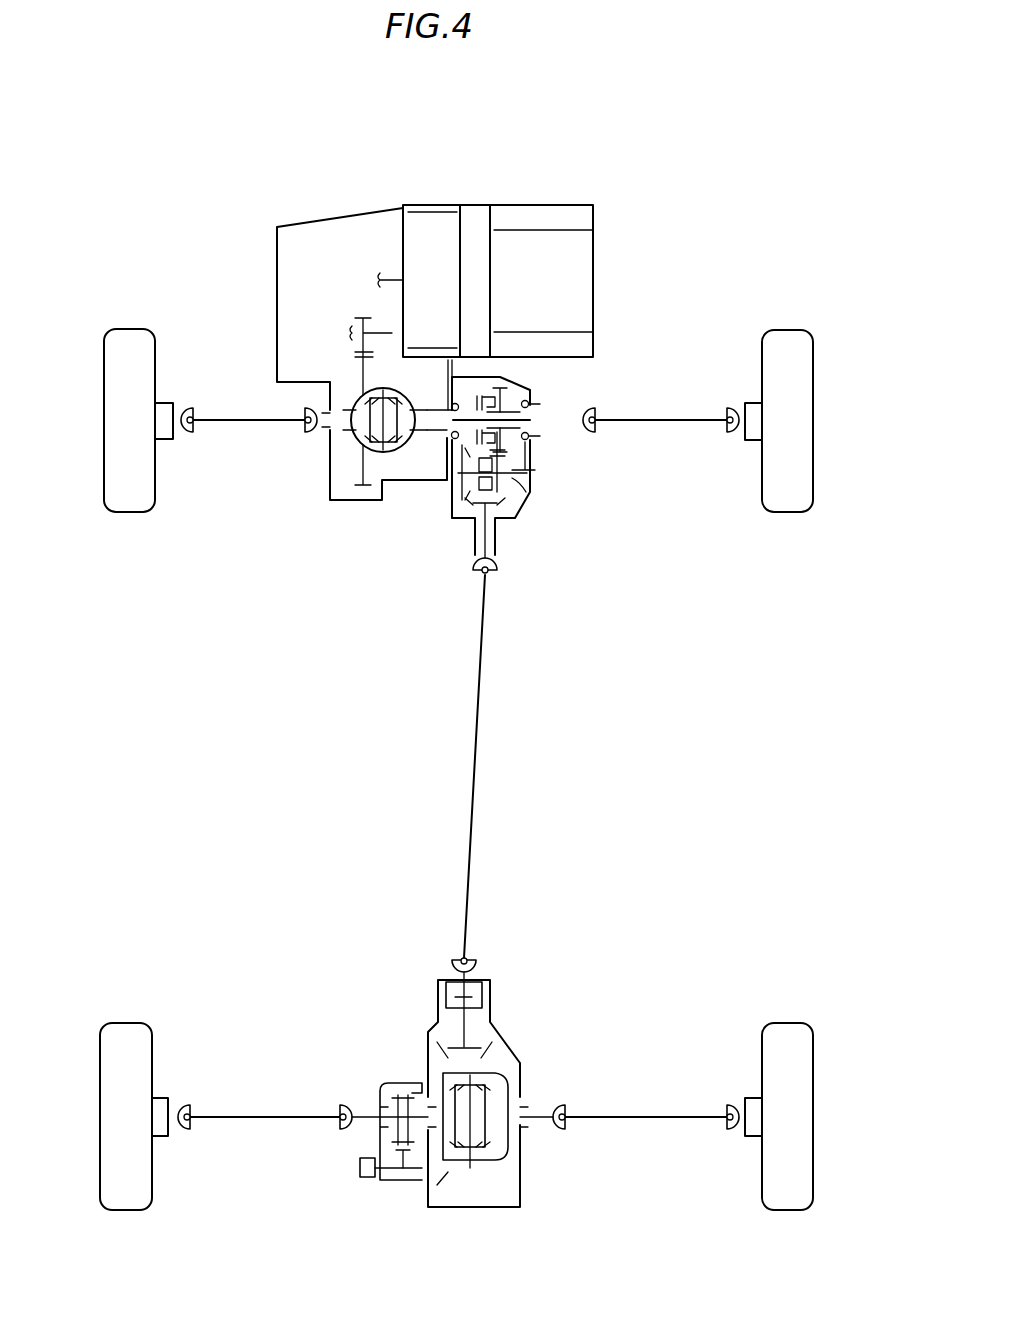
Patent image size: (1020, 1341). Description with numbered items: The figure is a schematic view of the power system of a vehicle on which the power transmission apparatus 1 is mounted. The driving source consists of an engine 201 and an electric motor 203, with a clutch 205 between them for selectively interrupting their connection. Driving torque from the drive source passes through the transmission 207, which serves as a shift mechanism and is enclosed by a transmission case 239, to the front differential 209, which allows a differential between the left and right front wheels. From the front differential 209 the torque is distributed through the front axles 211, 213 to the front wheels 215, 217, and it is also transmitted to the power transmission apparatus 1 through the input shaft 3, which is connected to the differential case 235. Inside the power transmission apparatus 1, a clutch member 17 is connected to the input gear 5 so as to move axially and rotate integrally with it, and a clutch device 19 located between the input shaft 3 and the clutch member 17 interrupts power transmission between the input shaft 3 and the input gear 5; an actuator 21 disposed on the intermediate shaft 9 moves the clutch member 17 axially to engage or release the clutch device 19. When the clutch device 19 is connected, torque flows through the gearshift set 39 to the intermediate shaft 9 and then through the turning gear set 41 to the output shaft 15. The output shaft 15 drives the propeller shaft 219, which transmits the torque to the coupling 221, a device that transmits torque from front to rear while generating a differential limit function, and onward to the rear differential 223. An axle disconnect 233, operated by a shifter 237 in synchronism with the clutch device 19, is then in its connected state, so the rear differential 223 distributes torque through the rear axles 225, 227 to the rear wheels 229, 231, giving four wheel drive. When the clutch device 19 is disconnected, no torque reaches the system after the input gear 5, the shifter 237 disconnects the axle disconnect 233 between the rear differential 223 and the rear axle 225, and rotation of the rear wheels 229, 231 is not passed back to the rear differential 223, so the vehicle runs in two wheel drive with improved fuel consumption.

The power transmission apparatus 1 is at (520, 534).
The input shaft 3 is at (446, 400).
The input gear 5 is at (508, 400).
The intermediate shaft 9 is at (514, 482).
The output shaft 15 is at (483, 540).
The clutch member 17 is at (488, 405).
The clutch device 19 is at (477, 386).
The actuator 21 is at (466, 466).
The gearshift set 39 is at (518, 456).
The turning gear set 41 is at (461, 512).
The engine 201 is at (545, 213).
The electric motor 203 is at (428, 220).
The clutch 205 is at (475, 213).
The transmission 207 is at (335, 230).
The front differential 209 is at (350, 385).
The front axle 211 is at (240, 423).
The front axle 213 is at (683, 423).
The front wheel 215 is at (127, 512).
The front wheel 217 is at (789, 512).
The propeller shaft 219 is at (477, 746).
The coupling 221 is at (496, 998).
The rear differential 223 is at (488, 1172).
The rear axle 225 is at (258, 1119).
The rear axle 227 is at (655, 1119).
The rear wheel 229 is at (123, 1210).
The rear wheel 231 is at (783, 1210).
The axle disconnect 233 is at (394, 1076).
The differential case 235 is at (360, 445).
The shifter 237 is at (366, 1186).
The transmission case 239 is at (277, 287).